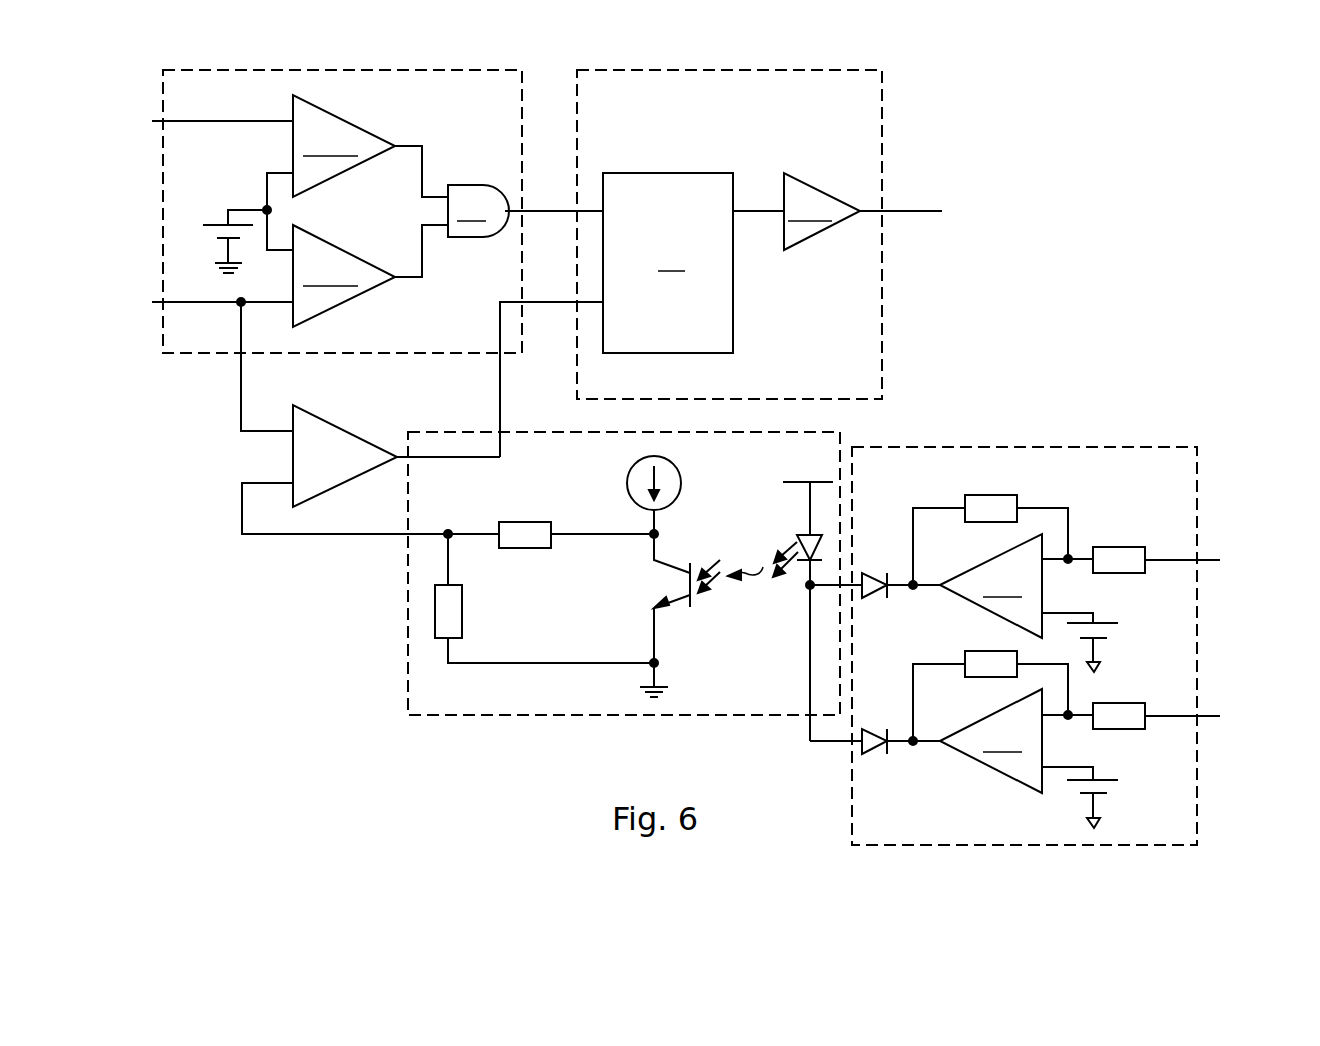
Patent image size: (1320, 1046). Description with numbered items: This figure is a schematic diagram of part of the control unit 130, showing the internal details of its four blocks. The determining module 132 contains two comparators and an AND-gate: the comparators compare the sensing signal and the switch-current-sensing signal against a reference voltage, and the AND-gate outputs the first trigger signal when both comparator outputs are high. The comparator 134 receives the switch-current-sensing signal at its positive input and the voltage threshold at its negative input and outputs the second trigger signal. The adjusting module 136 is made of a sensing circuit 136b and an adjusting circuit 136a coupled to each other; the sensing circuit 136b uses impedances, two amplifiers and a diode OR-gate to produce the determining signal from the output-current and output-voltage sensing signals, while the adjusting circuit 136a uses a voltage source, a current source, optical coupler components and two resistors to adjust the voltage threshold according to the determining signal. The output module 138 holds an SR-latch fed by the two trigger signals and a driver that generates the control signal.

The control unit 130 is at (121, 51).
The determining module 132 is at (185, 353).
The comparator 134 is at (353, 468).
The adjusting module 136 is at (207, 597).
The adjusting circuit 136a is at (408, 700).
The sensing circuit 136b is at (1197, 461).
The output module 138 is at (882, 381).